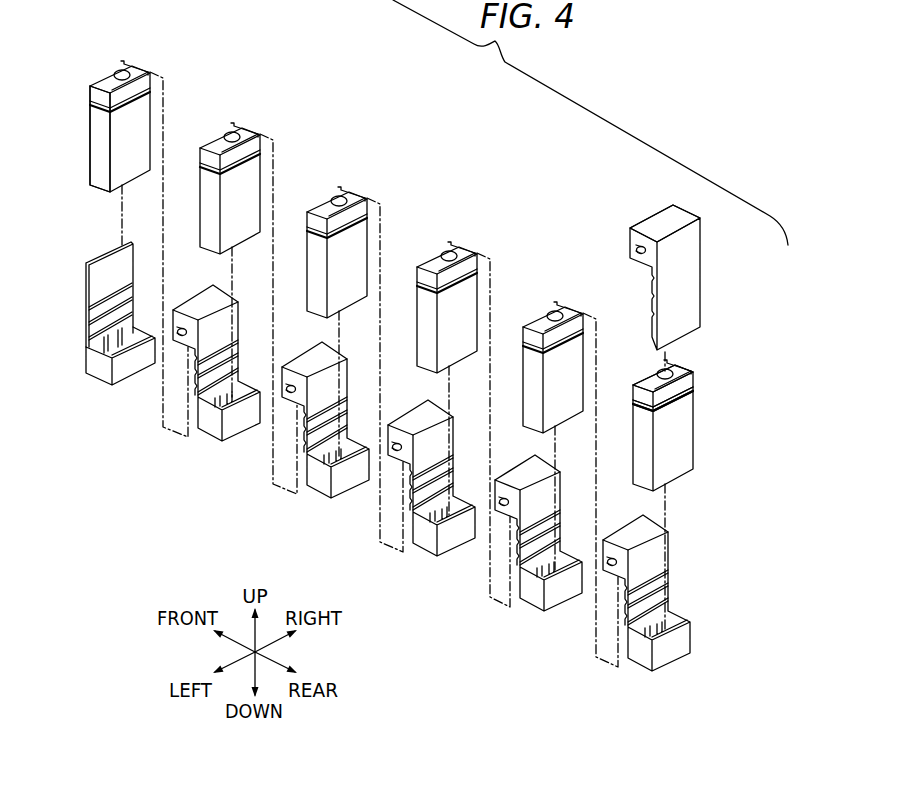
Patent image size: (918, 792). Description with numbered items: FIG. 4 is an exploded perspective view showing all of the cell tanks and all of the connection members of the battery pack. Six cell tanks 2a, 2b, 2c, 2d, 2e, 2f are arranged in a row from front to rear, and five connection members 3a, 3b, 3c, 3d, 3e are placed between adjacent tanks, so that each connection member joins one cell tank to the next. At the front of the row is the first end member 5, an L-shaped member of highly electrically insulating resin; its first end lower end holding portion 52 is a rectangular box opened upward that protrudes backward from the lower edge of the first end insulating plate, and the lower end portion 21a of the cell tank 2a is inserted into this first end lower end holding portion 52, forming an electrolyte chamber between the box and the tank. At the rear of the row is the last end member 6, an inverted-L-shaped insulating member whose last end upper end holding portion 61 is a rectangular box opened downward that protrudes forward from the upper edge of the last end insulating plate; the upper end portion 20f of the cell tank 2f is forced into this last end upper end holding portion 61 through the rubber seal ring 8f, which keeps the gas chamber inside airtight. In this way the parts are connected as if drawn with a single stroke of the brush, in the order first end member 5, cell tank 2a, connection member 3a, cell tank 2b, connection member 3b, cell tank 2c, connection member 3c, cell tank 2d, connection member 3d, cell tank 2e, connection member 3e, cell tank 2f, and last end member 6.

The cell tank 2a is at (132, 157).
The cell tank 2b is at (237, 222).
The cell tank 2c is at (347, 273).
The cell tank 2d is at (455, 333).
The cell tank 2e is at (565, 398).
The cell tank 2f is at (675, 450).
The lower end portion 21a is at (98, 178).
The upper end portion 20f is at (692, 377).
The seal ring 8f is at (693, 388).
The connection member 3a is at (208, 297).
The connection member 3b is at (318, 355).
The connection member 3c is at (425, 412).
The connection member 3d is at (530, 468).
The connection member 3e is at (638, 528).
The first end member 5 is at (86, 292).
The first end lower end holding portion 52 is at (90, 363).
The last end member 6 is at (692, 274).
The last end upper end holding portion 61 is at (660, 220).